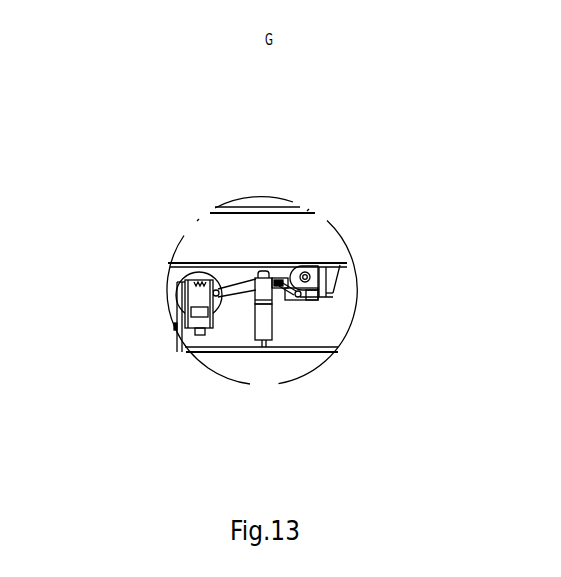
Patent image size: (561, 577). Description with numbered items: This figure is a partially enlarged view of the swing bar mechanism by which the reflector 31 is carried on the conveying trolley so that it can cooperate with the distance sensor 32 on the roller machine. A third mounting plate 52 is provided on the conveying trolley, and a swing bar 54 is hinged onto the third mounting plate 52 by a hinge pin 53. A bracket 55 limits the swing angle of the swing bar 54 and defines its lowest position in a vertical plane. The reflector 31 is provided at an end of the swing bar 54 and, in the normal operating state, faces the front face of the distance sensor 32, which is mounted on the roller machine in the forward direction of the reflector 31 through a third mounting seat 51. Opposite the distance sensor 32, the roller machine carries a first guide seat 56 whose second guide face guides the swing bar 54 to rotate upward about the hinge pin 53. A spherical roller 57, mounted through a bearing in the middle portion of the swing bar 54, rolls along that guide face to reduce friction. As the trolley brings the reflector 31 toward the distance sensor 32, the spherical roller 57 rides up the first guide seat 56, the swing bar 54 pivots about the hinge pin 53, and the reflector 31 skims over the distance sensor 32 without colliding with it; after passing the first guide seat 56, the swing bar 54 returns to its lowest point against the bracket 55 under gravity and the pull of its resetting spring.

The reflector 31 is at (197, 274).
The distance sensor 32 is at (202, 297).
The third mounting seat 51 is at (177, 327).
The third mounting plate 52 is at (328, 273).
The hinge pin 53 is at (302, 273).
The swing bar 54 is at (288, 276).
The bracket 55 is at (289, 298).
The first guide seat 56 is at (260, 325).
The spherical roller 57 is at (263, 273).